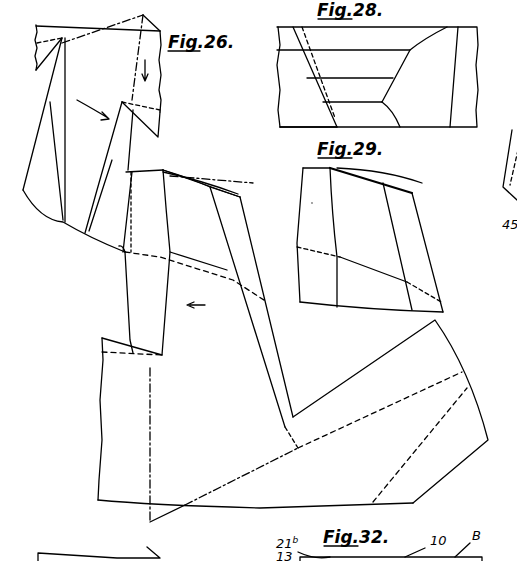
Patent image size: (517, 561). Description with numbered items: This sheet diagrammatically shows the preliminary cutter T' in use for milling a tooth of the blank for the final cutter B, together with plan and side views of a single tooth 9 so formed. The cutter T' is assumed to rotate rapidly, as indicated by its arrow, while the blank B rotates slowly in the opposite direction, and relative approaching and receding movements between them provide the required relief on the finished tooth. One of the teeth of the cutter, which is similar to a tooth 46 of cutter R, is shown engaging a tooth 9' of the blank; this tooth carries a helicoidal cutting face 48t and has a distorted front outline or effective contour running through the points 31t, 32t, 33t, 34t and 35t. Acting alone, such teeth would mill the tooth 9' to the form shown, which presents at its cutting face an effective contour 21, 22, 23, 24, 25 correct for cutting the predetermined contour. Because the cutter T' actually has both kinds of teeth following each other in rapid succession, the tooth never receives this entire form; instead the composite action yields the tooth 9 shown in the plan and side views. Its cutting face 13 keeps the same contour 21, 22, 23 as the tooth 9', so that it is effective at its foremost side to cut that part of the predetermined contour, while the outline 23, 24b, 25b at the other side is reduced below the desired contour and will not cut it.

In FIG. 26, the cutter T' is at (98, 76).
In FIG. 26, the contour point of distorted front outline 34t is at (108, 148).
In FIG. 26, the contour point of distorted front outline 33t is at (108, 158).
In FIG. 26, the contour point of distorted front outline 32t is at (138, 163).
In FIG. 26, the helicoidal cutting face 48t is at (98, 186).
In FIG. 26, the contour point of distorted front outline 35t is at (89, 232).
In FIG. 26, the contour point of distorted front outline 31t is at (113, 245).
In FIG. 26, the tooth 46 is at (72, 208).
In FIG. 26, the contour point 22 is at (147, 172).
In FIG. 28, the contour point 22 is at (282, 50).
In FIG. 29, the contour point 22 is at (318, 168).
In FIG. 26, the contour point 23 is at (150, 172).
In FIG. 28, the contour point 23 is at (318, 80).
In FIG. 29, the contour point 23 is at (315, 165).
In FIG. 26, the contour point 24 is at (160, 173).
In FIG. 28, the reduced outline point 24b is at (333, 108).
In FIG. 29, the reduced outline point 24b is at (330, 175).
In FIG. 26, the tooth 9' is at (234, 306).
In FIG. 28, the tooth 9 is at (412, 57).
In FIG. 29, the tooth 9 is at (410, 246).
In FIG. 26, the contour point 25 is at (170, 252).
In FIG. 28, the reduced outline point 25b is at (340, 125).
In FIG. 29, the reduced outline point 25b is at (340, 257).
In FIG. 26, the contour point 21 is at (125, 253).
In FIG. 28, the contour point 21 is at (295, 27).
In FIG. 29, the contour point 21 is at (298, 247).
In FIG. 26, the cutting face 13 is at (138, 273).
In FIG. 28, the cutting face 13 is at (330, 117).
In FIG. 29, the cutting face 13 is at (312, 203).
In FIG. 26, the cutter B is at (293, 412).
In FIG. 28, the cutter B is at (443, 40).
In FIG. 29, the cutter B is at (372, 298).